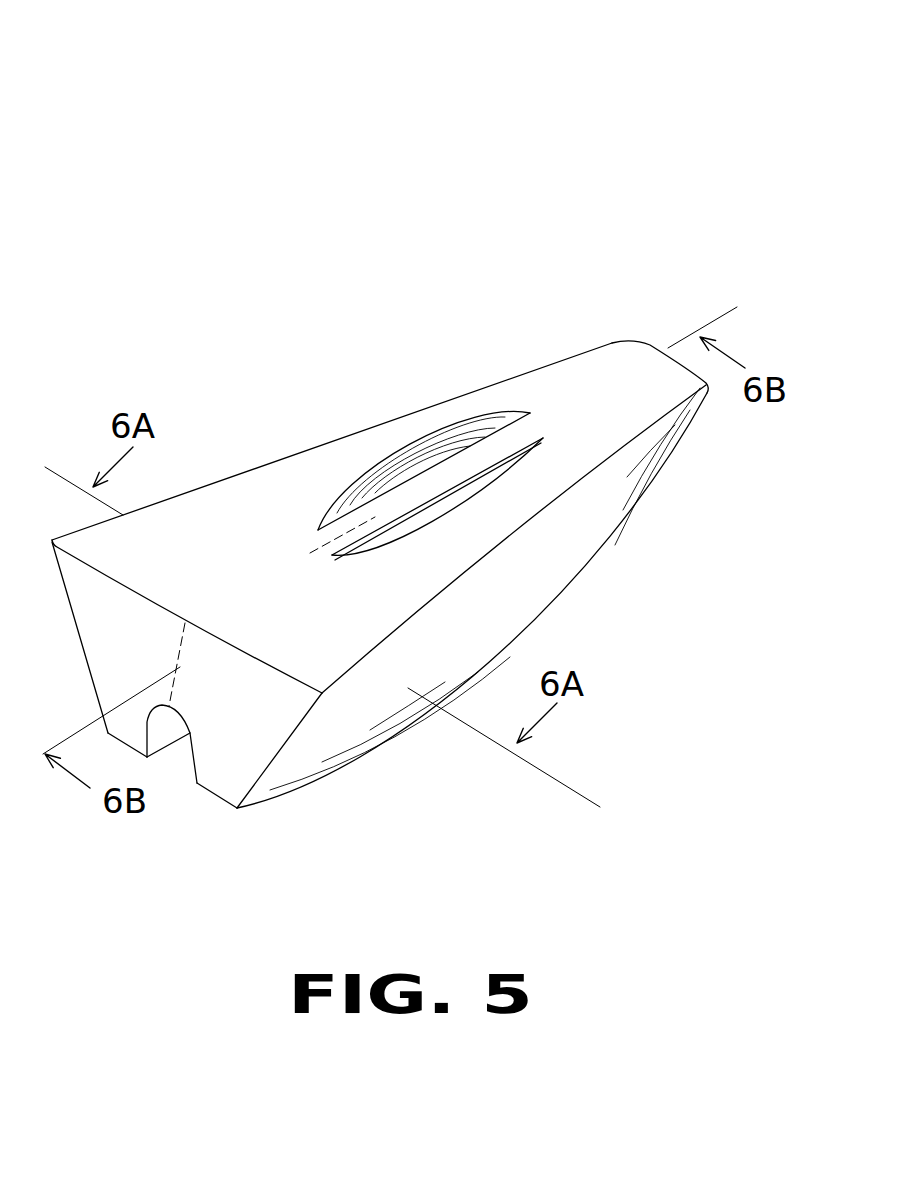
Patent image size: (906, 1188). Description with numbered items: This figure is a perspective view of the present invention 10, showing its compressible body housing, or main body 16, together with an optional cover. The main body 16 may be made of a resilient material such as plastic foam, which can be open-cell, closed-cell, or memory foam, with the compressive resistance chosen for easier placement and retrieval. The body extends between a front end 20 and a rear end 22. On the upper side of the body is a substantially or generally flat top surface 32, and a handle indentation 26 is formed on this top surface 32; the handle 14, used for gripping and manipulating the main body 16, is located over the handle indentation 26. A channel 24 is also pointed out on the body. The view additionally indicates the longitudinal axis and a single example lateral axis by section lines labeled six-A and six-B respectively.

The present invention 10 is at (190, 87).
The handle 14 is at (507, 442).
The compressible body housing 16 is at (608, 568).
The front end 20 is at (663, 338).
The rear end 22 is at (220, 806).
The channel 24 is at (183, 755).
The handle indentation 26 is at (467, 505).
The flat top surface 32 is at (247, 492).